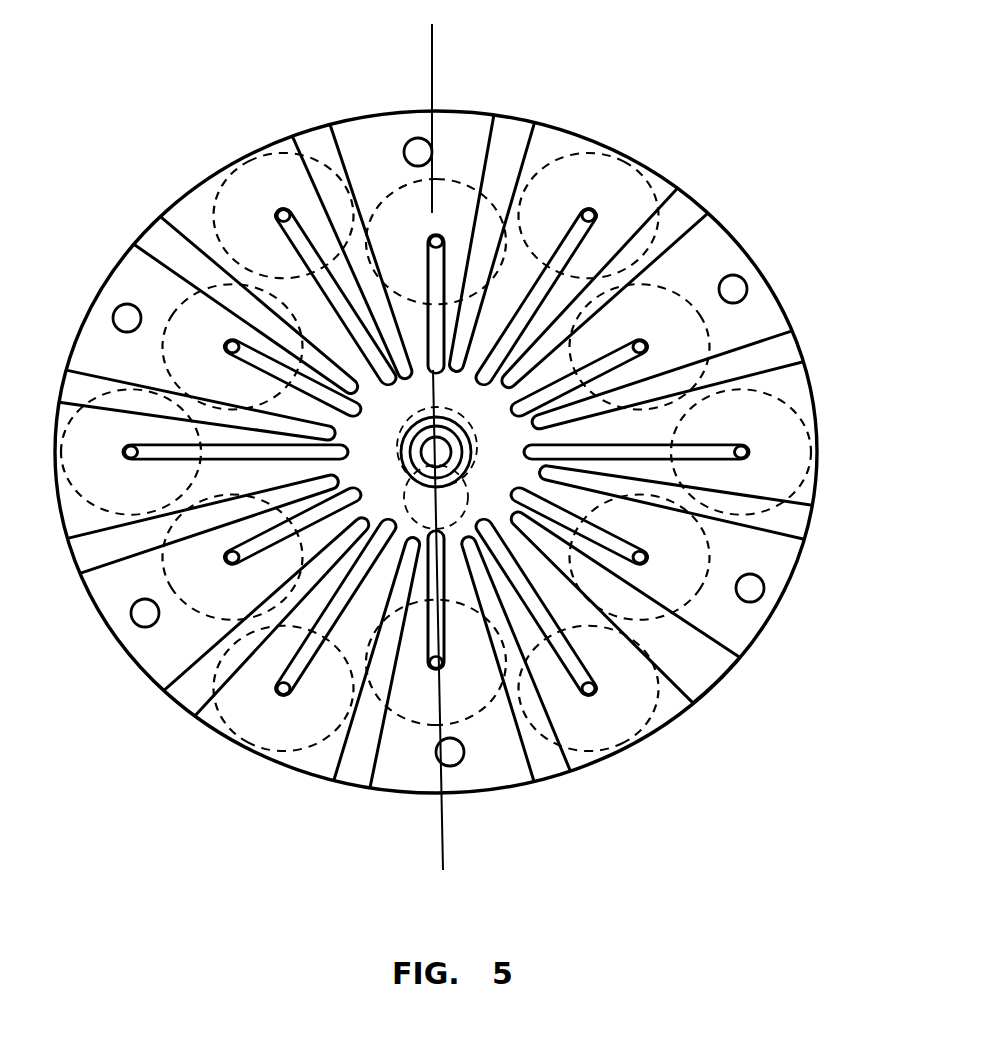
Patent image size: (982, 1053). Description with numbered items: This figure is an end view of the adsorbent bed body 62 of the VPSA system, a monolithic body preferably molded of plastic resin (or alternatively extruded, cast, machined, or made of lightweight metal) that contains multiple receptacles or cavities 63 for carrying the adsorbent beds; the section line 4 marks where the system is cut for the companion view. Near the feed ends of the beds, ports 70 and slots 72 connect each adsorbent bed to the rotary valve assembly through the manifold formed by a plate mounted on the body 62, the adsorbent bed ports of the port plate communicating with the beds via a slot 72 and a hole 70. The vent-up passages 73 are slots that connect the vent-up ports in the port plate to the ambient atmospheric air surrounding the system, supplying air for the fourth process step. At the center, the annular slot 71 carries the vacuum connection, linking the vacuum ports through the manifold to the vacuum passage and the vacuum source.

The section line 4- 4 is at (498, 865).
The adsorbent bed body 62 is at (781, 290).
The receptacles or cavities 63 is at (818, 412).
The ports 70 is at (606, 752).
The annular slot 71 is at (401, 451).
The slots 72 is at (698, 698).
The vent-up passages 73 is at (717, 640).